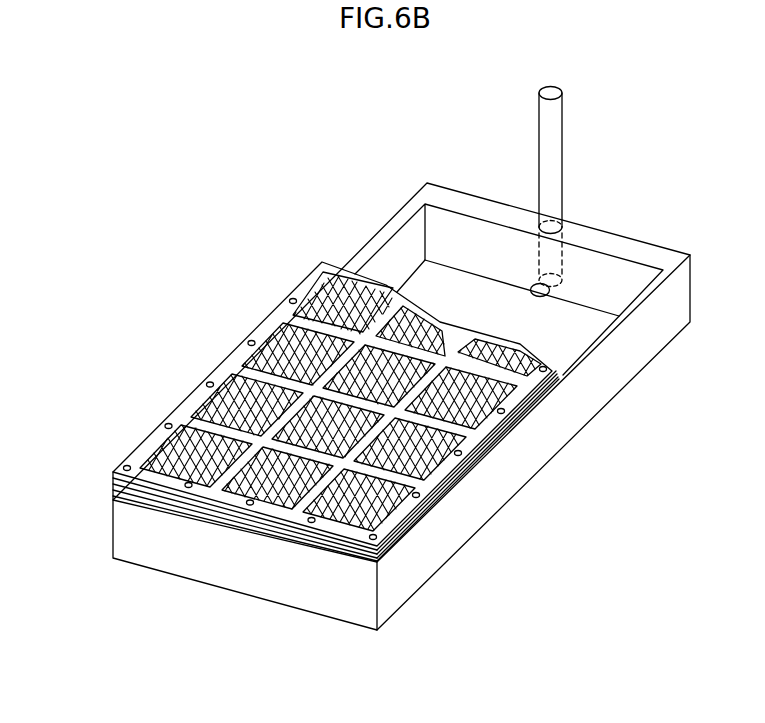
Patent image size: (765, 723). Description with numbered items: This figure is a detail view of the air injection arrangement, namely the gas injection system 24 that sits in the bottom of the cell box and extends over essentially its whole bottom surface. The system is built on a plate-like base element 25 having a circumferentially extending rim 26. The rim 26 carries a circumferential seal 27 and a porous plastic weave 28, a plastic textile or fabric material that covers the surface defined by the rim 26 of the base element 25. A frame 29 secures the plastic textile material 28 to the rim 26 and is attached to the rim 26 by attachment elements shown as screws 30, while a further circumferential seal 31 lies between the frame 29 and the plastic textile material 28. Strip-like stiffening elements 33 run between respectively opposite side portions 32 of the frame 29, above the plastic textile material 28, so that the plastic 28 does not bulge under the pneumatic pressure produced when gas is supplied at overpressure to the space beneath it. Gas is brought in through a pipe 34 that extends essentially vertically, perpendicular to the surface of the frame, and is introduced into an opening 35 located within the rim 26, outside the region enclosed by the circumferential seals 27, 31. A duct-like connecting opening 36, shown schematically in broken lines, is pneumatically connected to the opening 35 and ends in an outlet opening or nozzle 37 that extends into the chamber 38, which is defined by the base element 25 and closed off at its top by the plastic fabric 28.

The gas injection system 24 is at (338, 592).
The plate-like base element 25 is at (215, 560).
The circumferentially extending rim 26 is at (613, 322).
The circumferential seal 27 is at (383, 563).
The porous plastic weave 28 is at (115, 488).
The frame 29 is at (232, 340).
The screws 30 is at (292, 297).
The further circumferential seal 31 is at (115, 481).
The side portions 32 is at (383, 263).
The strip-like stiffening elements 33 is at (400, 477).
The pipe 34 is at (552, 181).
The opening 35 is at (561, 225).
The duct-like connecting opening 36 is at (556, 280).
The outlet opening or nozzle 37 is at (534, 287).
The chamber 38 is at (434, 277).